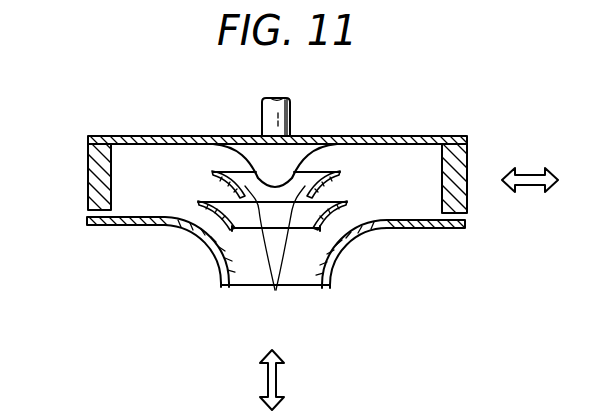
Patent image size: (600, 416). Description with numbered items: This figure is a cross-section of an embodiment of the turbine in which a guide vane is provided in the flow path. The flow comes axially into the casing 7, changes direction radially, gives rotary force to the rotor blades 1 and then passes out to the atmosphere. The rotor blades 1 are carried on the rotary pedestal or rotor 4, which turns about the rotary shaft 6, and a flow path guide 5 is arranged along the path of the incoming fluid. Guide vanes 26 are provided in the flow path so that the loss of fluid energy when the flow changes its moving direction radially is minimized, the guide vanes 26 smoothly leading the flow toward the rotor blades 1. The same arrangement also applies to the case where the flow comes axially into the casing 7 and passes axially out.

The rotor blade 1 is at (88, 192).
The rotary pedestal 4 is at (390, 136).
The flow path guide 5 is at (252, 150).
The rotary shaft 6 is at (284, 109).
The casing 7 is at (431, 229).
The guide vanes 26 is at (212, 204).